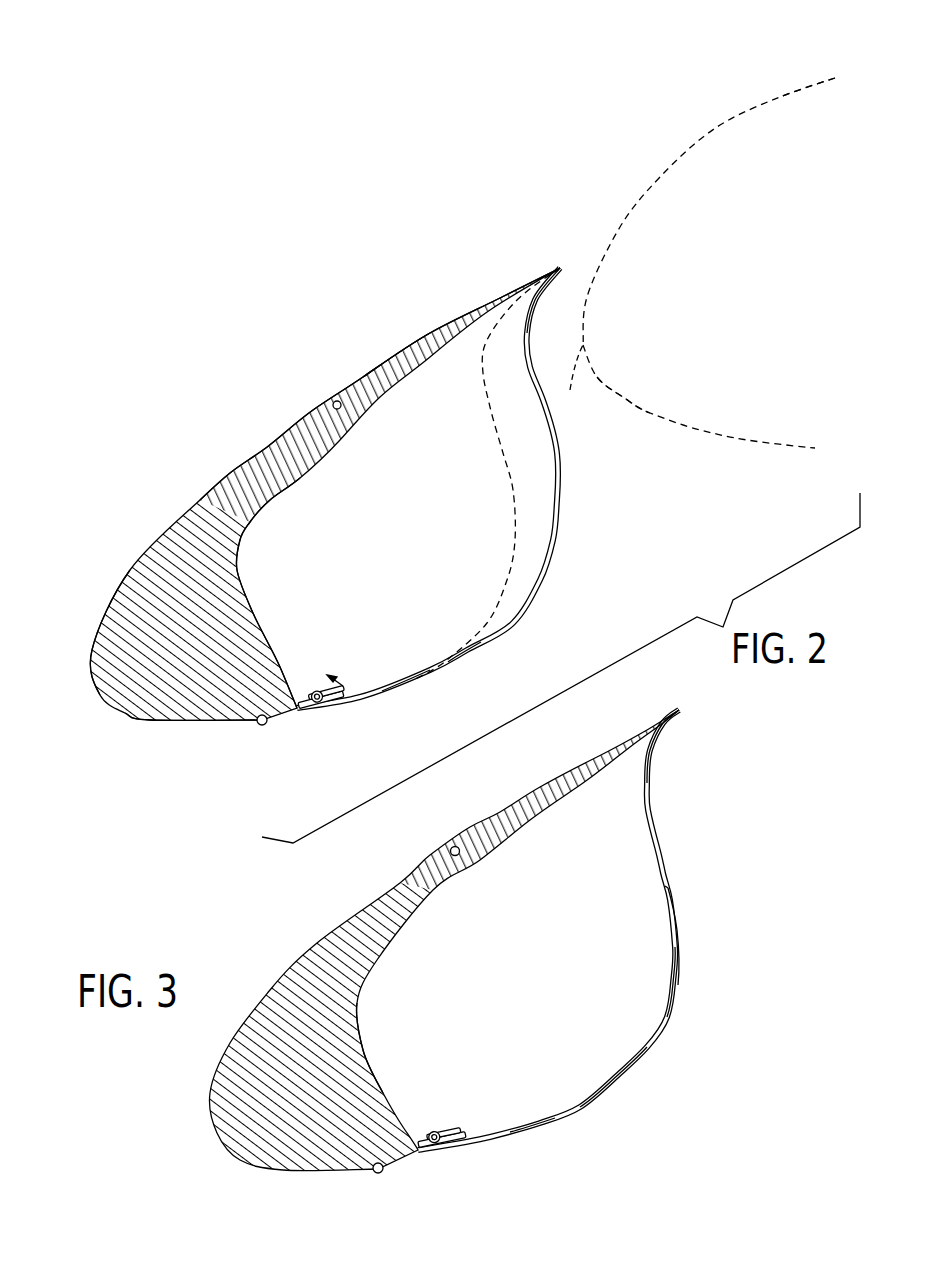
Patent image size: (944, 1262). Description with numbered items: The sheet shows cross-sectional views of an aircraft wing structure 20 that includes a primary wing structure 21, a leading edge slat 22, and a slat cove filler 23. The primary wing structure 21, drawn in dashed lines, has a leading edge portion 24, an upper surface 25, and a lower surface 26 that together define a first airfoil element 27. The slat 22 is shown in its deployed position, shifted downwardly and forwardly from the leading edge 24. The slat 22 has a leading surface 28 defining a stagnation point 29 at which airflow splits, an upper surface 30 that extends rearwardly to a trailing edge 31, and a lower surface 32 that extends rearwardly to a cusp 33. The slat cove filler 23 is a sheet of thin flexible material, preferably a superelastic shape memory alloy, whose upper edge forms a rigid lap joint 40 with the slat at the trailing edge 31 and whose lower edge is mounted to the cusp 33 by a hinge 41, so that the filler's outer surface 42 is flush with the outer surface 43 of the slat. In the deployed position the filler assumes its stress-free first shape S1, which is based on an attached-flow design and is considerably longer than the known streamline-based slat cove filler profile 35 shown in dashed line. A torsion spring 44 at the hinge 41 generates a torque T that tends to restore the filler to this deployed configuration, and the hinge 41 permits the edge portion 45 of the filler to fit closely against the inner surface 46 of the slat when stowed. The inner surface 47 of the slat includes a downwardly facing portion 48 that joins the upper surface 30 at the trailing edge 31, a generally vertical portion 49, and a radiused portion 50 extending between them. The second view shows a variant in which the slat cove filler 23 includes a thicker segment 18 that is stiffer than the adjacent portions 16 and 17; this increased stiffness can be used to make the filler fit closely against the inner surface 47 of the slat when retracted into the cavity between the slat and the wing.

In FIG. 2, the aircraft wing structure 20 is at (313, 337).
In FIG. 2, the primary wing structure 21 is at (717, 123).
In FIG. 2, the leading edge slat 22 is at (143, 550).
In FIG. 3, the leading edge slat 22 is at (277, 1170).
In FIG. 2, the slat cove filler 23 is at (540, 607).
In FIG. 3, the slat cove filler 23 is at (580, 1107).
In FIG. 2, the leading edge portion 24 is at (574, 388).
In FIG. 2, the upper surface 25 is at (782, 93).
In FIG. 2, the lower surface 26 is at (700, 430).
In FIG. 2, the first airfoil element 27 is at (647, 412).
In FIG. 2, the leading surface 28 is at (90, 660).
In FIG. 2, the stagnation point 29 is at (157, 720).
In FIG. 2, the upper surface 30 is at (232, 476).
In FIG. 2, the trailing edge 31 is at (560, 257).
In FIG. 3, the trailing edge 31 is at (683, 700).
In FIG. 2, the lower surface 32 is at (233, 720).
In FIG. 2, the cusp 33 is at (348, 700).
In FIG. 2, the slat cove filler profile 35 is at (507, 463).
In FIG. 2, the rigid lap joint 40 is at (557, 273).
In FIG. 2, the hinge 41 is at (317, 690).
In FIG. 3, the hinge 41 is at (433, 1137).
In FIG. 2, the outer surface 42 is at (420, 680).
In FIG. 2, the outer surface 43 is at (342, 707).
In FIG. 2, the torsion spring 44 is at (303, 687).
In FIG. 3, the torsion spring 44 is at (423, 1137).
In FIG. 2, the edge portion 45 is at (393, 690).
In FIG. 2, the inner surface 46 is at (293, 663).
In FIG. 3, the inner surface 46 is at (663, 730).
In FIG. 2, the inner surface 47 is at (253, 613).
In FIG. 3, the inner surface 47 is at (367, 1057).
In FIG. 2, the downwardly facing portion 48 is at (382, 396).
In FIG. 2, the vertical portion 49 is at (280, 670).
In FIG. 2, the radiused portion 50 is at (240, 553).
In FIG. 3, the adjacent portion 16 is at (660, 853).
In FIG. 3, the adjacent portion 17 is at (623, 1077).
In FIG. 3, the thicker segment 18 is at (670, 970).
In FIG. 2, the first shape S1 is at (467, 653).
In FIG. 3, the first shape S1 is at (547, 1130).
In FIG. 2, the torque T is at (342, 675).